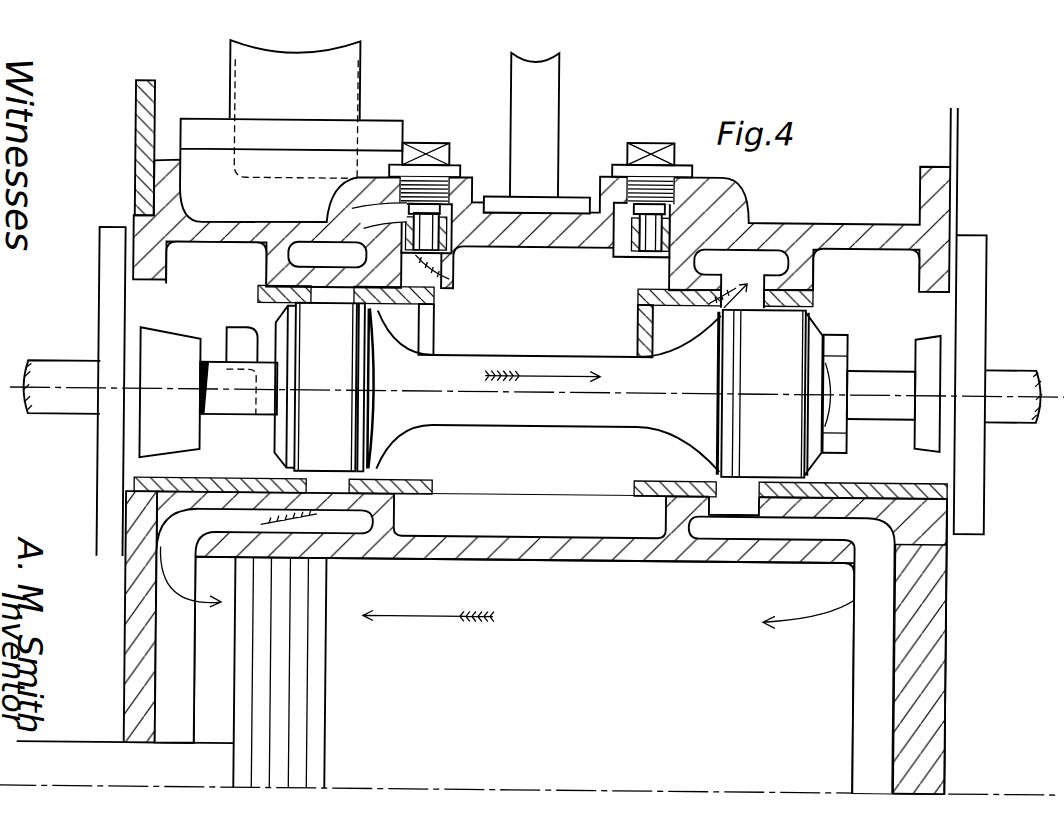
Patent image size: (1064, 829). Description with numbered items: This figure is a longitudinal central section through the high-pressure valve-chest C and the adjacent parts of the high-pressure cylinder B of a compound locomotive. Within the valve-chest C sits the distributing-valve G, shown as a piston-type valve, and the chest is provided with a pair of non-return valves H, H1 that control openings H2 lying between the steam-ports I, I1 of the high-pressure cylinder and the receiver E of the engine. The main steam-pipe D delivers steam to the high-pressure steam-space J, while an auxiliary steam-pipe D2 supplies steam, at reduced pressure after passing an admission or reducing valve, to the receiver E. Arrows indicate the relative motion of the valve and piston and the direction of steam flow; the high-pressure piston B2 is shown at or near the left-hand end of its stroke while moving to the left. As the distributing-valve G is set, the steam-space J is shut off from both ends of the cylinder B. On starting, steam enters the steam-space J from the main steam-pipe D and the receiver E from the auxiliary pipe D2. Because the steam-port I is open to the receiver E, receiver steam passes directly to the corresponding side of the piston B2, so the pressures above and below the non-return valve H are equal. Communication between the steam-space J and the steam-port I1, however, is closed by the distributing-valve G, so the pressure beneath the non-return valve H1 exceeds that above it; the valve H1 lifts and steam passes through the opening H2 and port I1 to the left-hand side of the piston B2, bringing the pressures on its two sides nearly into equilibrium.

The high-pressure cylinder B is at (535, 635).
The high-pressure piston B2 is at (279, 672).
The high-pressure valve-chest C is at (569, 242).
The main steam-pipe D is at (291, 101).
The auxiliary steam-pipe D2 is at (538, 133).
The receiver E is at (542, 386).
The distributing-valve G is at (541, 391).
The non-return valve H is at (657, 219).
The non-return valve H1 is at (406, 185).
The openings H2 is at (569, 252).
The steam-port I is at (545, 517).
The steam-port I1 is at (346, 252).
The high-pressure steam-space J is at (540, 353).